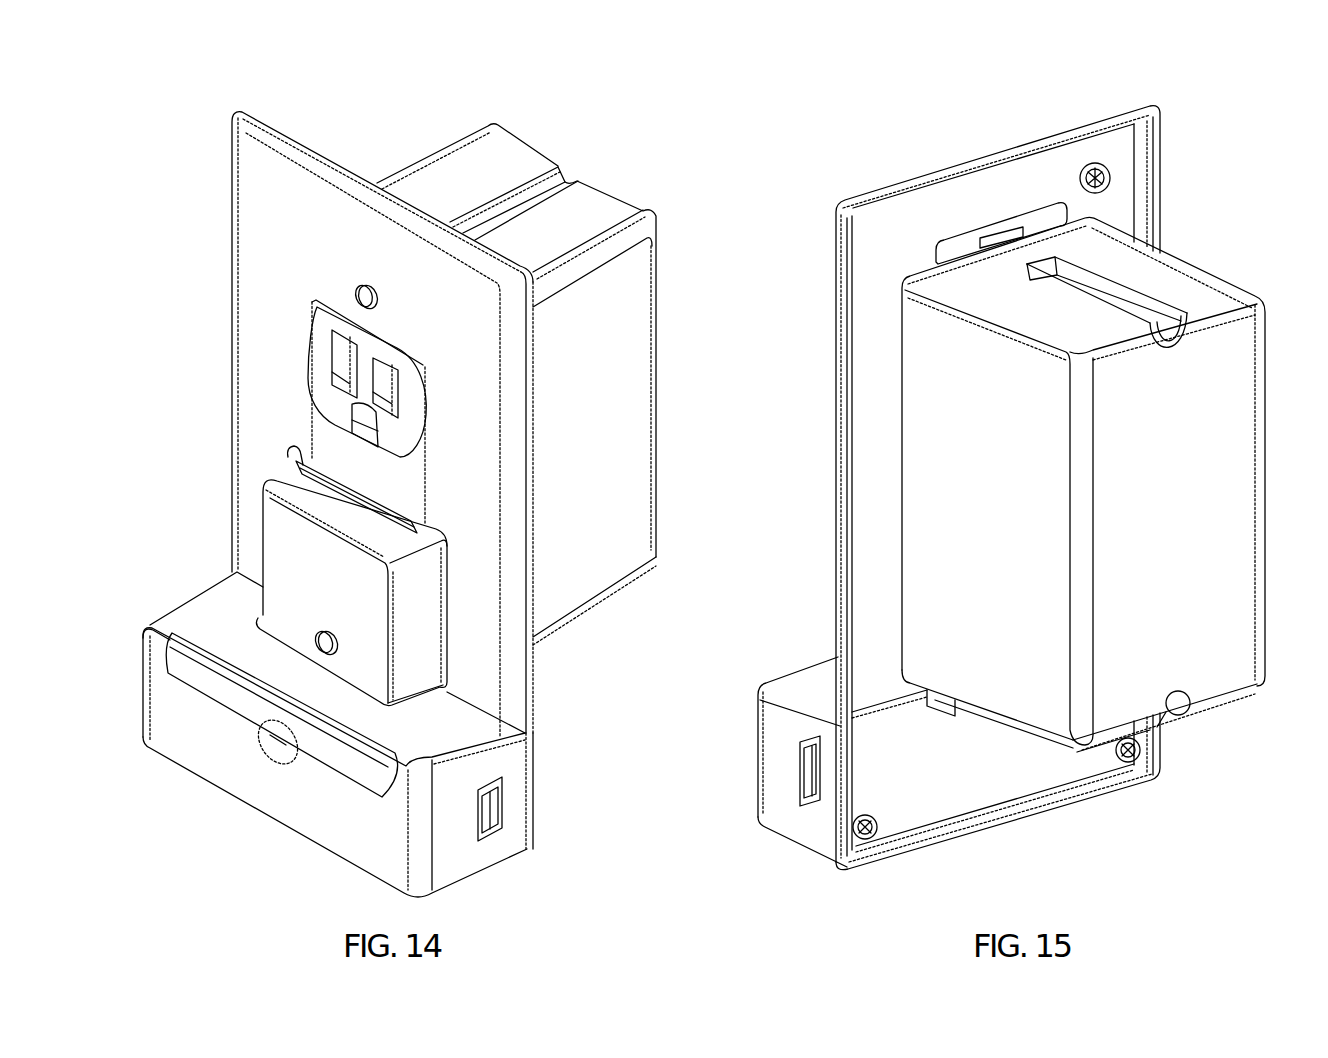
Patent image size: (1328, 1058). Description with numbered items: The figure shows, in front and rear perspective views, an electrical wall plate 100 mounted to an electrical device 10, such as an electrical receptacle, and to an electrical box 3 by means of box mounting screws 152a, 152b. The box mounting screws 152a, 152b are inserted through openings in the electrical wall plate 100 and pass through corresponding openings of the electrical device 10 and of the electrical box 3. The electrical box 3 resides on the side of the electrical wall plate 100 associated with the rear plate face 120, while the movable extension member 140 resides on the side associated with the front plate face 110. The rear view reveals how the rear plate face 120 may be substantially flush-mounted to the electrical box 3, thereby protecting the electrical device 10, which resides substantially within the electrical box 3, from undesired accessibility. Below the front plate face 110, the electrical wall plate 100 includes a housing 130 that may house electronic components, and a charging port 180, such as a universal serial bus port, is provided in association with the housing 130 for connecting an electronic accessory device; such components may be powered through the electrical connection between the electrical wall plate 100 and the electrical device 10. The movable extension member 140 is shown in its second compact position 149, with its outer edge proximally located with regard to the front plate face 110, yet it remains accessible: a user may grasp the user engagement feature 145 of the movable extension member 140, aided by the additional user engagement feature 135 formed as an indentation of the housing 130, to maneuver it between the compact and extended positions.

In FIG. 14, the electrical box 3 is at (597, 152).
In FIG. 15, the electrical box 3 is at (1205, 257).
In FIG. 14, the electrical device 10 is at (318, 350).
In FIG. 14, the electrical wall plate 100 is at (370, 470).
In FIG. 15, the electrical wall plate 100 is at (943, 467).
In FIG. 14, the front plate face 110 is at (247, 172).
In FIG. 15, the rear plate face 120 is at (1115, 152).
In FIG. 14, the housing 130 is at (370, 730).
In FIG. 15, the housing 130 is at (912, 725).
In FIG. 14, the user engagement feature 135 is at (282, 758).
In FIG. 14, the movable extension member 140 is at (189, 687).
In FIG. 14, the user engagement feature 145 is at (275, 734).
In FIG. 14, the second compact position 149 is at (161, 633).
In FIG. 14, the box mounting screw 152a is at (362, 291).
In FIG. 14, the box mounting screw 152b is at (322, 636).
In FIG. 14, the charging port 180 is at (487, 800).
In FIG. 15, the charging port 180 is at (806, 780).